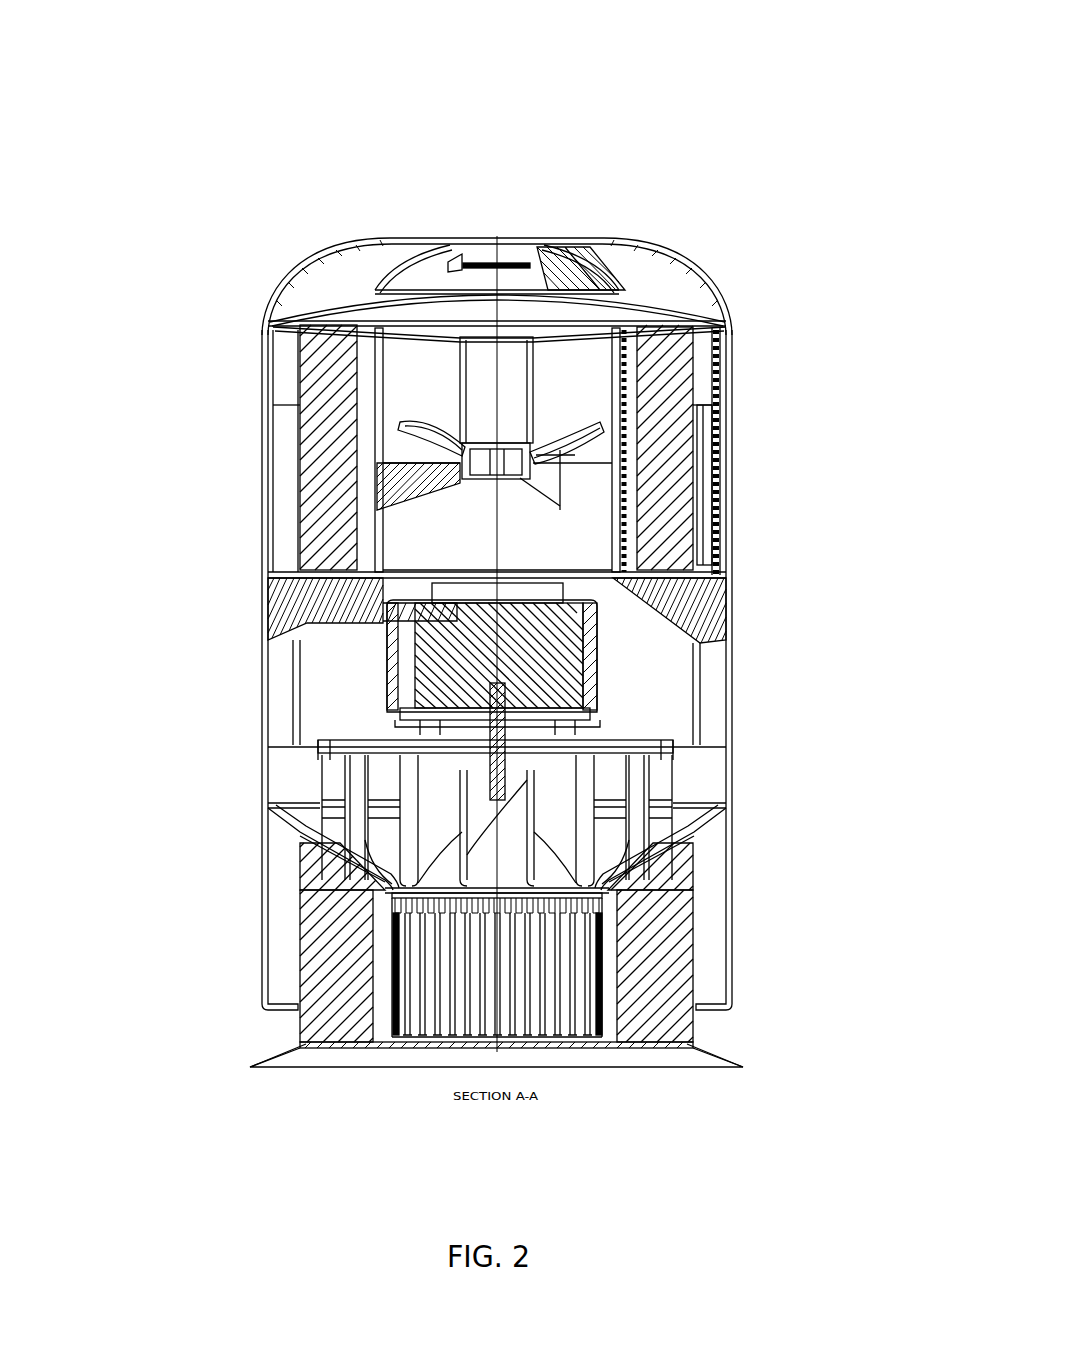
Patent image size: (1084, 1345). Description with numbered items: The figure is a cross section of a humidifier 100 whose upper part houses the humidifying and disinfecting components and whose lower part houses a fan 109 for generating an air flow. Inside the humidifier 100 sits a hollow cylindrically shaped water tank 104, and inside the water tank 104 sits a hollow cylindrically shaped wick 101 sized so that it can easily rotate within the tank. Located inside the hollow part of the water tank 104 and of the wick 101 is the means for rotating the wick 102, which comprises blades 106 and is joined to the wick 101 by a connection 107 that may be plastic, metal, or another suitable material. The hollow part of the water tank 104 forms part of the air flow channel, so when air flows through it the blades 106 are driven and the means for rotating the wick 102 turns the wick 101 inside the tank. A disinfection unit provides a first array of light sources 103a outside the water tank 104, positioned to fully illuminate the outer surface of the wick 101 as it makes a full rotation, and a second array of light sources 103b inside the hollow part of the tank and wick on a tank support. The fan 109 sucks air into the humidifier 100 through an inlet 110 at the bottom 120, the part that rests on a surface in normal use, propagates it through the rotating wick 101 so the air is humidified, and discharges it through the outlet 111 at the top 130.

The humidifier 100 is at (731, 186).
The wick 101 is at (672, 548).
The means for rotating the wick 102 is at (460, 438).
The first array of light sources 103a is at (712, 380).
The second array of light sources 103b is at (617, 373).
The water tank 104 is at (278, 480).
The blades 106 is at (583, 430).
The connection 107 is at (358, 308).
The fan 109 is at (400, 643).
The inlet 110 is at (267, 1030).
The outlet 111 is at (382, 258).
The bottom 120 is at (647, 1080).
The top 130 is at (585, 153).